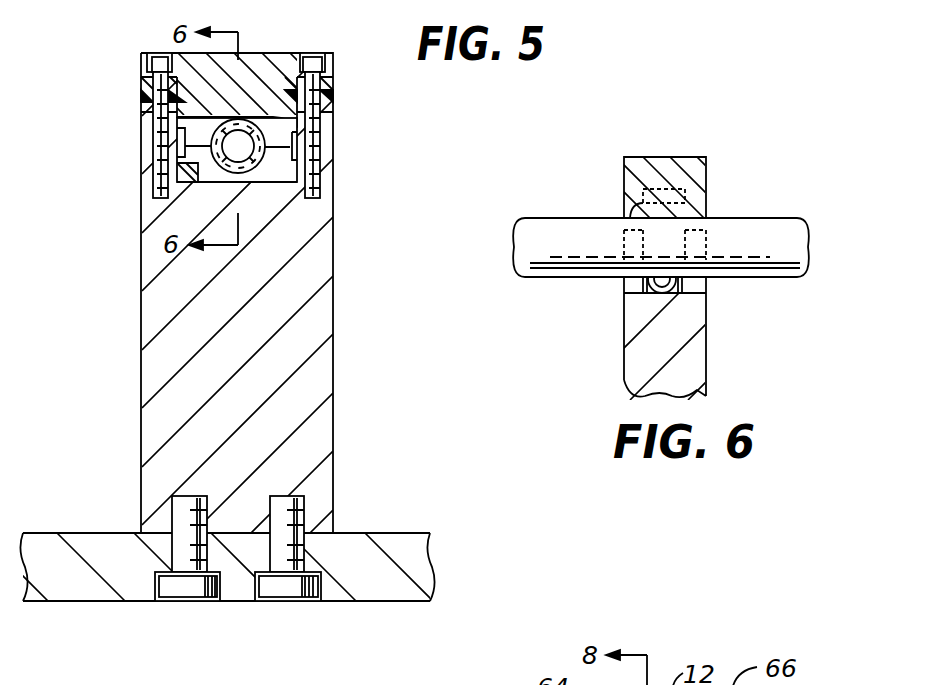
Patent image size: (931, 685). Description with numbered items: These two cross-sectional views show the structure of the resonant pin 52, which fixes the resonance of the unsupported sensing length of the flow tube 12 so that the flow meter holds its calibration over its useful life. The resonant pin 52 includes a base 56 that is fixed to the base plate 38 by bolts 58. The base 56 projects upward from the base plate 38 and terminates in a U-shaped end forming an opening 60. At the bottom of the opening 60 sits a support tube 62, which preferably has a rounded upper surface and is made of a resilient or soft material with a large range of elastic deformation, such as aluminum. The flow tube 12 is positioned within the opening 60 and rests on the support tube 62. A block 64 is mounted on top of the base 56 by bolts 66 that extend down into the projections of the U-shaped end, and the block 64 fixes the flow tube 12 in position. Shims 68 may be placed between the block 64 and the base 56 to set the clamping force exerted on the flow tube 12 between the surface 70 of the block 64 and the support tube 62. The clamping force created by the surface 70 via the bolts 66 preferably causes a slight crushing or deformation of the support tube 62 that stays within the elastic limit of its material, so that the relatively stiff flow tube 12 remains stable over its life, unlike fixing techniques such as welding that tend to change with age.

In FIG. 5, the flow tube 12 is at (212, 146).
In FIG. 6, the flow tube 12 is at (752, 232).
In FIG. 5, the base plate 38 is at (362, 545).
In FIG. 5, the resonant pin 52 is at (420, 262).
In FIG. 5, the base 56 is at (320, 368).
In FIG. 6, the base 56 is at (687, 358).
In FIG. 5, the bolts 58 is at (197, 587).
In FIG. 5, the opening 60 is at (290, 147).
In FIG. 6, the opening 60 is at (702, 284).
In FIG. 5, the support tube 62 is at (283, 168).
In FIG. 6, the support tube 62 is at (673, 294).
In FIG. 5, the block 64 is at (282, 55).
In FIG. 6, the block 64 is at (647, 168).
In FIG. 5, the bolts 66 is at (158, 53).
In FIG. 5, the shims 68 is at (143, 97).
In FIG. 5, the surface 70 is at (298, 125).
In FIG. 6, the surface 70 is at (637, 212).